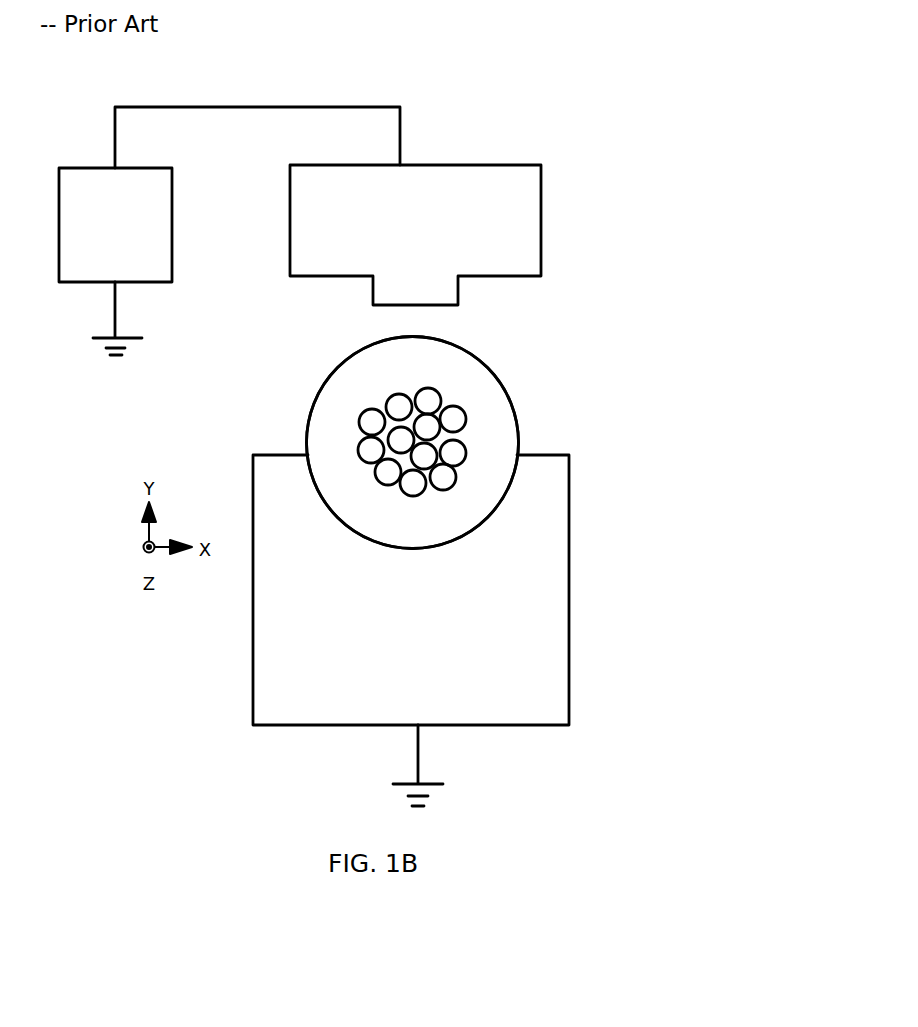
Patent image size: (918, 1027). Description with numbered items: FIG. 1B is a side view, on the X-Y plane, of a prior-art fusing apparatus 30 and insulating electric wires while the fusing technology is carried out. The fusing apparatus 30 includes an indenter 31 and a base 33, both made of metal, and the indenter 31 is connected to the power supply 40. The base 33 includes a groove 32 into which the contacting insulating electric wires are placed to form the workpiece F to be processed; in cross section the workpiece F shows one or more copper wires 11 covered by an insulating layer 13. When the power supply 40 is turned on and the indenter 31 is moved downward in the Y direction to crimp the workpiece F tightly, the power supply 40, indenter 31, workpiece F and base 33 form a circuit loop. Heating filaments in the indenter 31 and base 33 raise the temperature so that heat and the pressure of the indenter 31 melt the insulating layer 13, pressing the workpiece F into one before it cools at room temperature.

The power supply 40 is at (115, 261).
The fusing apparatus 30 is at (628, 230).
The indenter 31 is at (541, 198).
The groove 32 is at (462, 535).
The base 33 is at (569, 653).
The insulating layer 13 is at (500, 380).
The copper wires 11 is at (466, 418).
The workpiece to be processed F is at (592, 410).